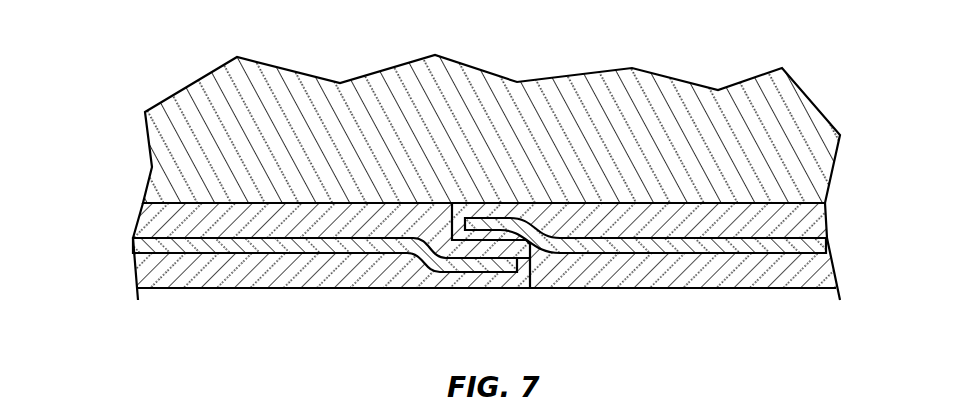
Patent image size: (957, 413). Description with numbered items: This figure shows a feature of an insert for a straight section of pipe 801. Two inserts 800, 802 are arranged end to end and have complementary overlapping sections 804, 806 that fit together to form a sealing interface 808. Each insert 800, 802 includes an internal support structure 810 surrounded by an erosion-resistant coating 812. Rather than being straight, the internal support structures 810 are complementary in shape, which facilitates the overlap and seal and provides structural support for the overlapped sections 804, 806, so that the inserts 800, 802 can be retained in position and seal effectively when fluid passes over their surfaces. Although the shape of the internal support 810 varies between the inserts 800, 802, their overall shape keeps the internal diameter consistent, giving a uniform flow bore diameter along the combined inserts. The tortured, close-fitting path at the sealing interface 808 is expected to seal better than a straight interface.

The insert 800 is at (252, 280).
The straight section of pipe 801 is at (84, 286).
The insert 802 is at (719, 282).
The overlapping section 804 is at (484, 282).
The overlapping section 806 is at (503, 240).
The sealing interface 808 is at (532, 283).
The internal support structure 810 is at (138, 247).
The erosion-resistant coating 812 is at (140, 211).